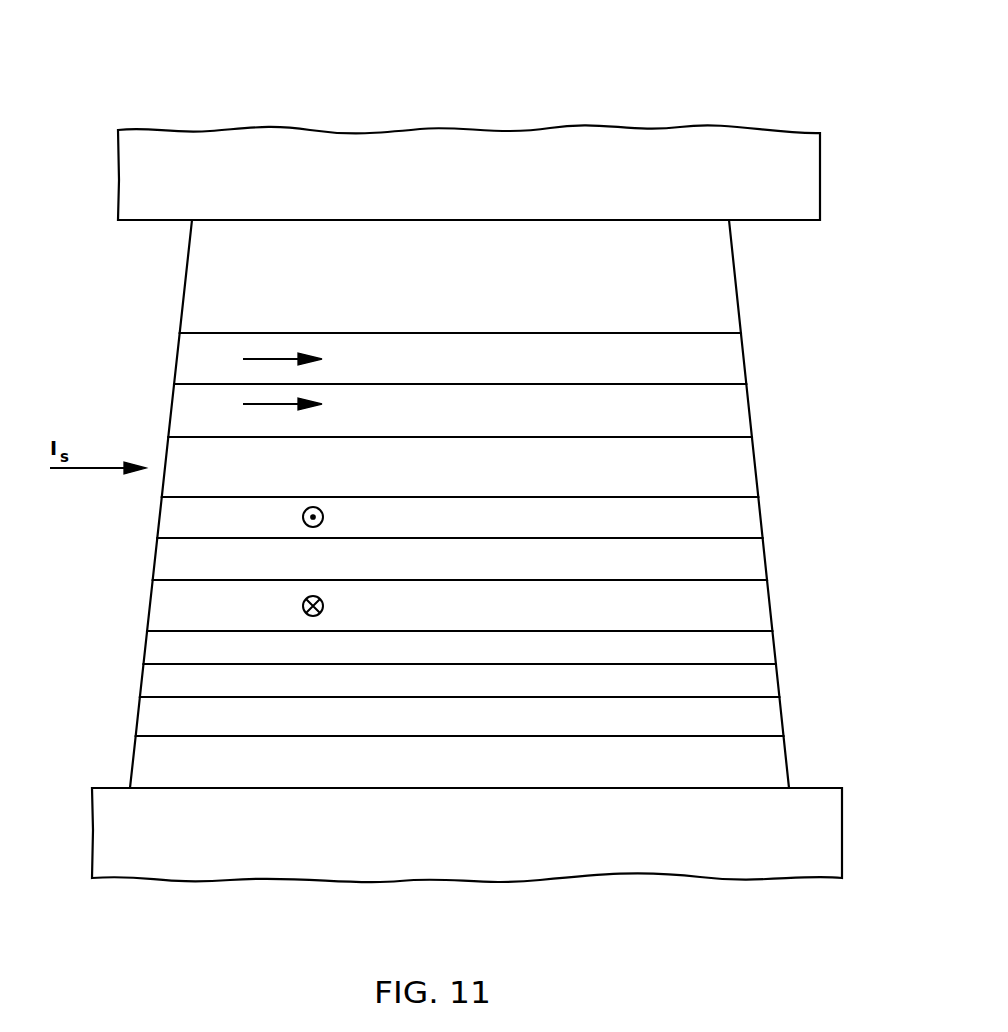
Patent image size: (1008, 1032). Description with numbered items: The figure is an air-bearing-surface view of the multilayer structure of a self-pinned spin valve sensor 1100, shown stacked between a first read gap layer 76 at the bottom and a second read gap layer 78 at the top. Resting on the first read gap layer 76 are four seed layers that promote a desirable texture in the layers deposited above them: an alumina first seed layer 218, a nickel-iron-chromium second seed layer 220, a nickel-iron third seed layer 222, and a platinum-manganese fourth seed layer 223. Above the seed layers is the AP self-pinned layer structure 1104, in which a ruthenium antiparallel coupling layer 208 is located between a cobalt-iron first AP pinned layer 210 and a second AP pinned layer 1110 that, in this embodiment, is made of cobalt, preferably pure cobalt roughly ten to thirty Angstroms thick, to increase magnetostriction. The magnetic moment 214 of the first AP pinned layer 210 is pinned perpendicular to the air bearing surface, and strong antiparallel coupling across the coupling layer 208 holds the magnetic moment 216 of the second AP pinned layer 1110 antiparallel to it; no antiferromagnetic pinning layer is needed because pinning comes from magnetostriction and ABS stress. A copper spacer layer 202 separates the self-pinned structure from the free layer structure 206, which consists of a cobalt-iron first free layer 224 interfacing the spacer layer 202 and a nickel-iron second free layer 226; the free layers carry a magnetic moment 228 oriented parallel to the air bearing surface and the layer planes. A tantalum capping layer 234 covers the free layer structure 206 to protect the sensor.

The spin valve sensor 1100 is at (40, 788).
The free layer structure 206 is at (84, 437).
The AP self-pinned layer structure 1104 is at (66, 497).
The second read gap layer 78 is at (802, 167).
The first read gap layer 76 is at (750, 862).
The capping layer 234 is at (738, 281).
The second free layer 226 is at (742, 361).
The first free layer 224 is at (748, 409).
The spacer layer 202 is at (755, 461).
The second AP pinned layer 1110 is at (760, 516).
The antiparallel coupling layer 208 is at (765, 563).
The first AP pinned layer 210 is at (772, 606).
The fourth seed layer 223 is at (778, 651).
The third seed layer 222 is at (780, 681).
The second seed layer 220 is at (783, 713).
The first seed layer 218 is at (788, 763).
The magnetic moment of free layer structure 228 is at (277, 400).
The magnetic moment of second AP pinned layer 216 is at (301, 515).
The magnetic moment of first AP pinned layer 214 is at (301, 605).